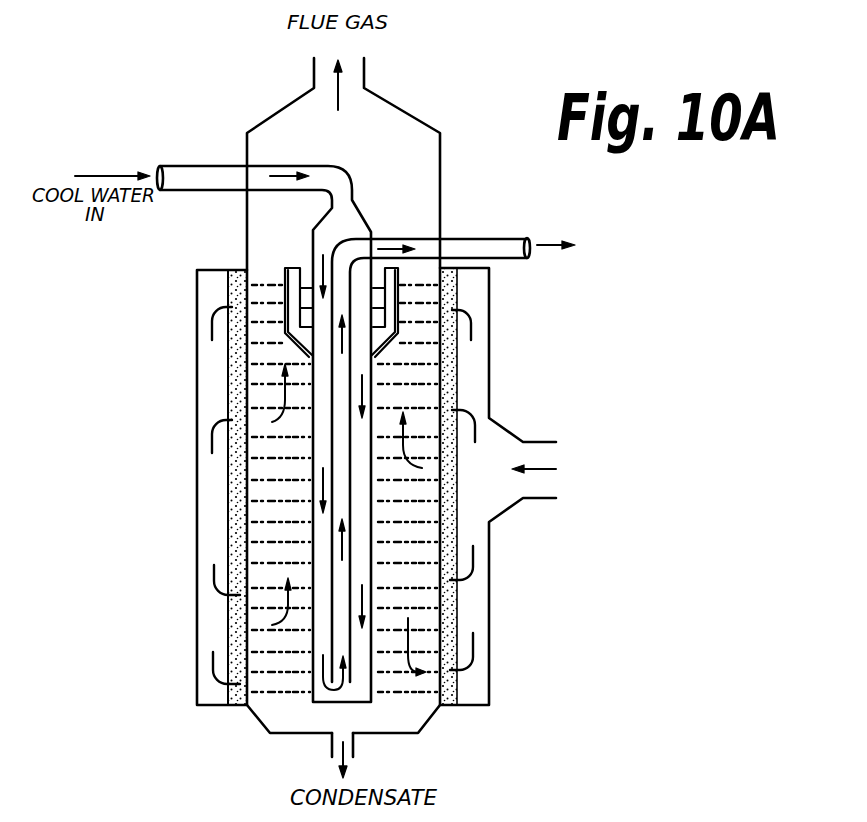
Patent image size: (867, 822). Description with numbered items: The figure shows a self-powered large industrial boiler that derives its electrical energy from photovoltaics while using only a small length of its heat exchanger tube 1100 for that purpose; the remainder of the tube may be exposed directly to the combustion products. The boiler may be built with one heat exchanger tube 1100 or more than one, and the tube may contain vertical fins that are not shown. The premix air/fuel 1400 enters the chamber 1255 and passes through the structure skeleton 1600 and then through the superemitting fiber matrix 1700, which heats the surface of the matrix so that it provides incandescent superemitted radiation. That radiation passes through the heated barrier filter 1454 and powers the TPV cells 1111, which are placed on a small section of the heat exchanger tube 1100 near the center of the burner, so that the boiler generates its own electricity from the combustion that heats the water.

The heat exchanger tube 1100 is at (313, 660).
The photovoltaics 1111 is at (386, 268).
The heated barrier filter 1454 is at (285, 270).
The structure skeleton 1600 is at (443, 352).
The superemitting fiber matrix 1700 is at (443, 378).
The chamber 1255 is at (490, 456).
The premix air/fuel 1400 is at (545, 472).